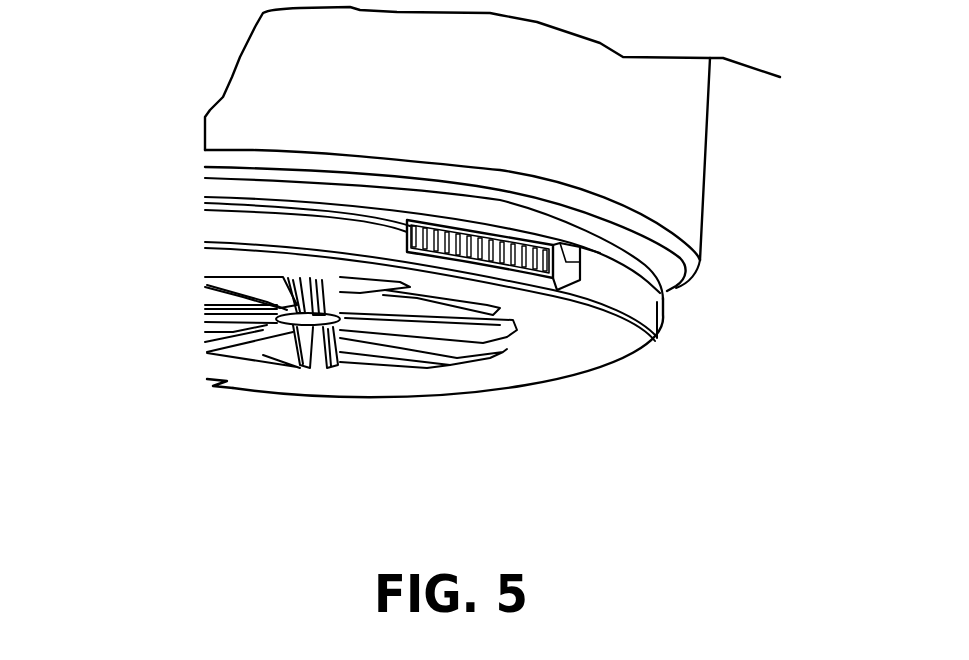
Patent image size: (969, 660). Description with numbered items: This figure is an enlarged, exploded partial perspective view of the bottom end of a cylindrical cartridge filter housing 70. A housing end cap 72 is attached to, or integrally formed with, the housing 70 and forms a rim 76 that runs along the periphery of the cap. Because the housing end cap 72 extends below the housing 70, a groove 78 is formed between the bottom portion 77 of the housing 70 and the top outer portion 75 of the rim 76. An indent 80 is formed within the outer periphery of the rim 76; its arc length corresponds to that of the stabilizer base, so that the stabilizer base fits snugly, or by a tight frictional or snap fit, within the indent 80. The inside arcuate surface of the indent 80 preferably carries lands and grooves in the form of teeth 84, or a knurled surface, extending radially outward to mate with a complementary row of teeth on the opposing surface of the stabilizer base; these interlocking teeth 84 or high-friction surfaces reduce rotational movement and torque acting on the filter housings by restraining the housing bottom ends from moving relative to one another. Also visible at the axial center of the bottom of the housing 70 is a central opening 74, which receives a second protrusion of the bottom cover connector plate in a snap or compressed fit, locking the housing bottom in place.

The housing 70 is at (290, 87).
The housing end cap 72 is at (477, 460).
The central opening 74 is at (307, 318).
The top outer portion of rim 75 is at (225, 198).
The rim 76 is at (287, 223).
The bottom portion of housing 77 is at (637, 247).
The groove 78 is at (672, 295).
The indent 80 is at (565, 270).
The teeth 84 is at (468, 250).